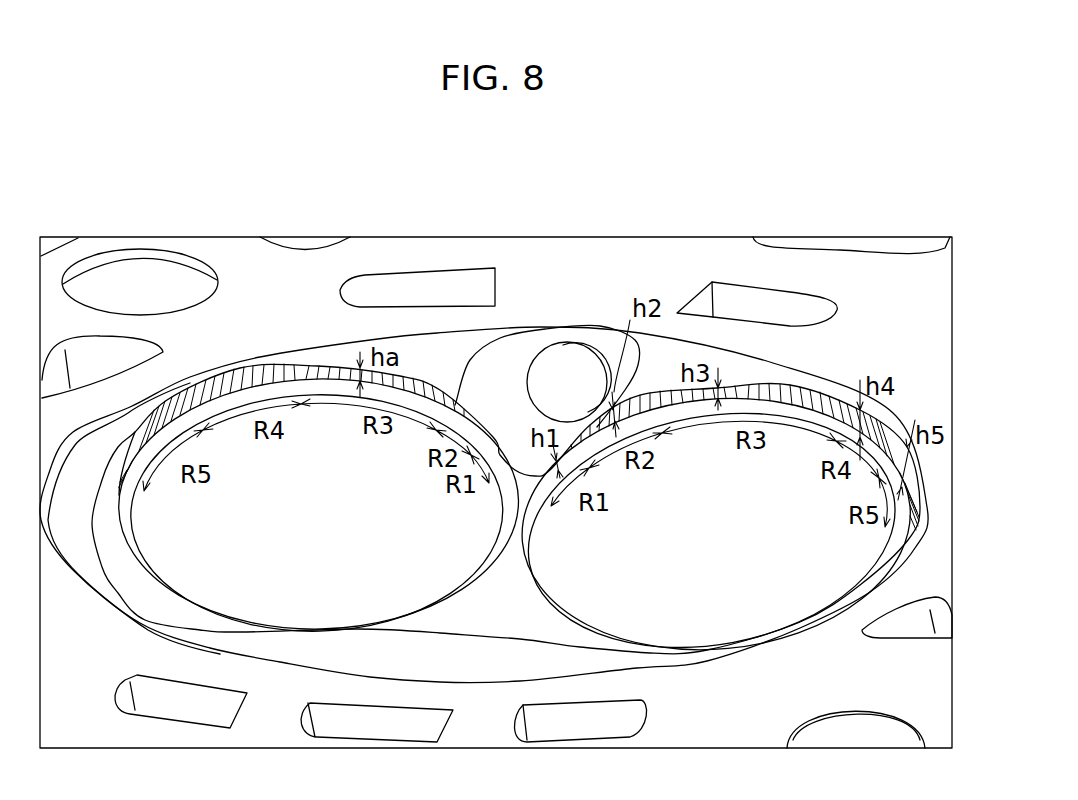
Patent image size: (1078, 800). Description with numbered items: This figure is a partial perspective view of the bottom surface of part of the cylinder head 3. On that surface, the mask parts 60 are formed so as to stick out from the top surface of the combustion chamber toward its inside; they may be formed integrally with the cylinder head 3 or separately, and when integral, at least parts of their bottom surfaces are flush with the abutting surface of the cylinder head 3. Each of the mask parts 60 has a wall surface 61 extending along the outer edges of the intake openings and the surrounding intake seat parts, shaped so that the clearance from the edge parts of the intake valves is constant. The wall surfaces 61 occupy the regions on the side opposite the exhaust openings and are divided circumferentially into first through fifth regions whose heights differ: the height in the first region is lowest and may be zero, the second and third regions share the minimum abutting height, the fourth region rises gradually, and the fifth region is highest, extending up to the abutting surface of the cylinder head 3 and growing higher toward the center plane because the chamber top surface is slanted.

The cylinder head 3 is at (937, 330).
The mask parts 60 is at (437, 352).
The wall surfaces 61 is at (183, 385).